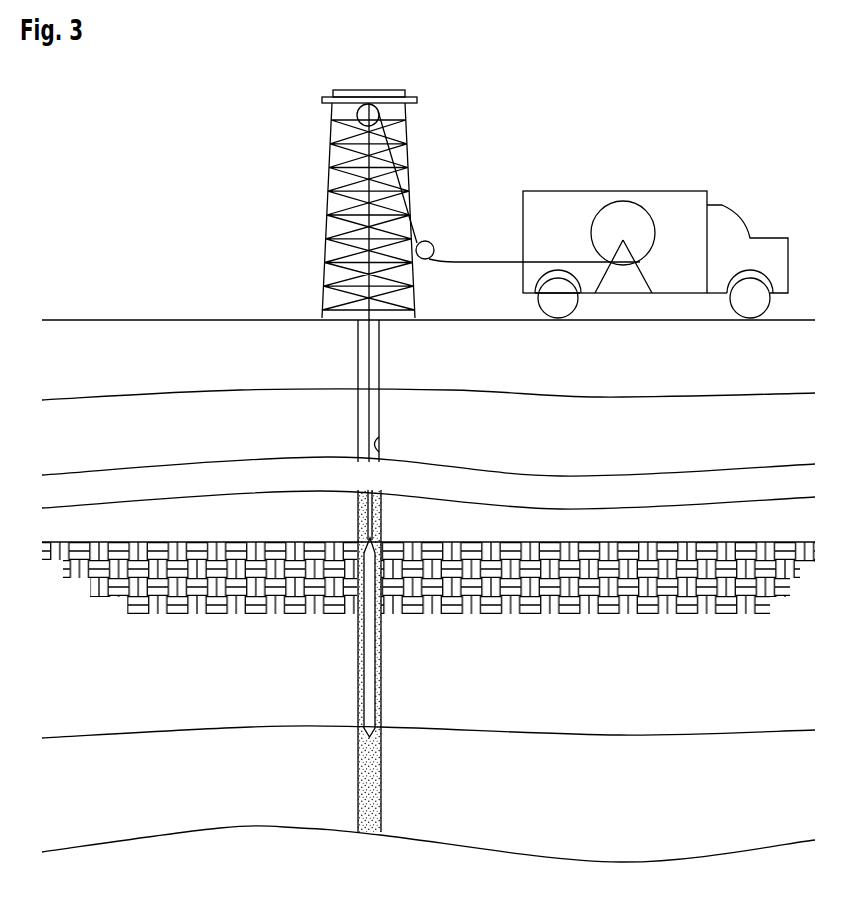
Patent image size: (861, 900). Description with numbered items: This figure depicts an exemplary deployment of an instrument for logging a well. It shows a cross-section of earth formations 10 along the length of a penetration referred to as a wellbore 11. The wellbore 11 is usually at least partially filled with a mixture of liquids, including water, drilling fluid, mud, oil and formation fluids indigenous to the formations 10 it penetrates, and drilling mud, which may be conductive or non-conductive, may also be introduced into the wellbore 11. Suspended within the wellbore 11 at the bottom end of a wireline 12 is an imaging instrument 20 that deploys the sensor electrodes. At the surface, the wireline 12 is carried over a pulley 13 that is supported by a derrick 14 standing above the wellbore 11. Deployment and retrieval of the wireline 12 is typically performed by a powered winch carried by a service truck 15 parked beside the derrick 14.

The earth formations 10 is at (614, 447).
The wellbore 11 is at (375, 415).
The wireline 12 is at (383, 447).
The pulley 13 is at (357, 116).
The derrick 14 is at (325, 268).
The service truck 15 is at (672, 196).
The imaging instrument 20 is at (370, 703).